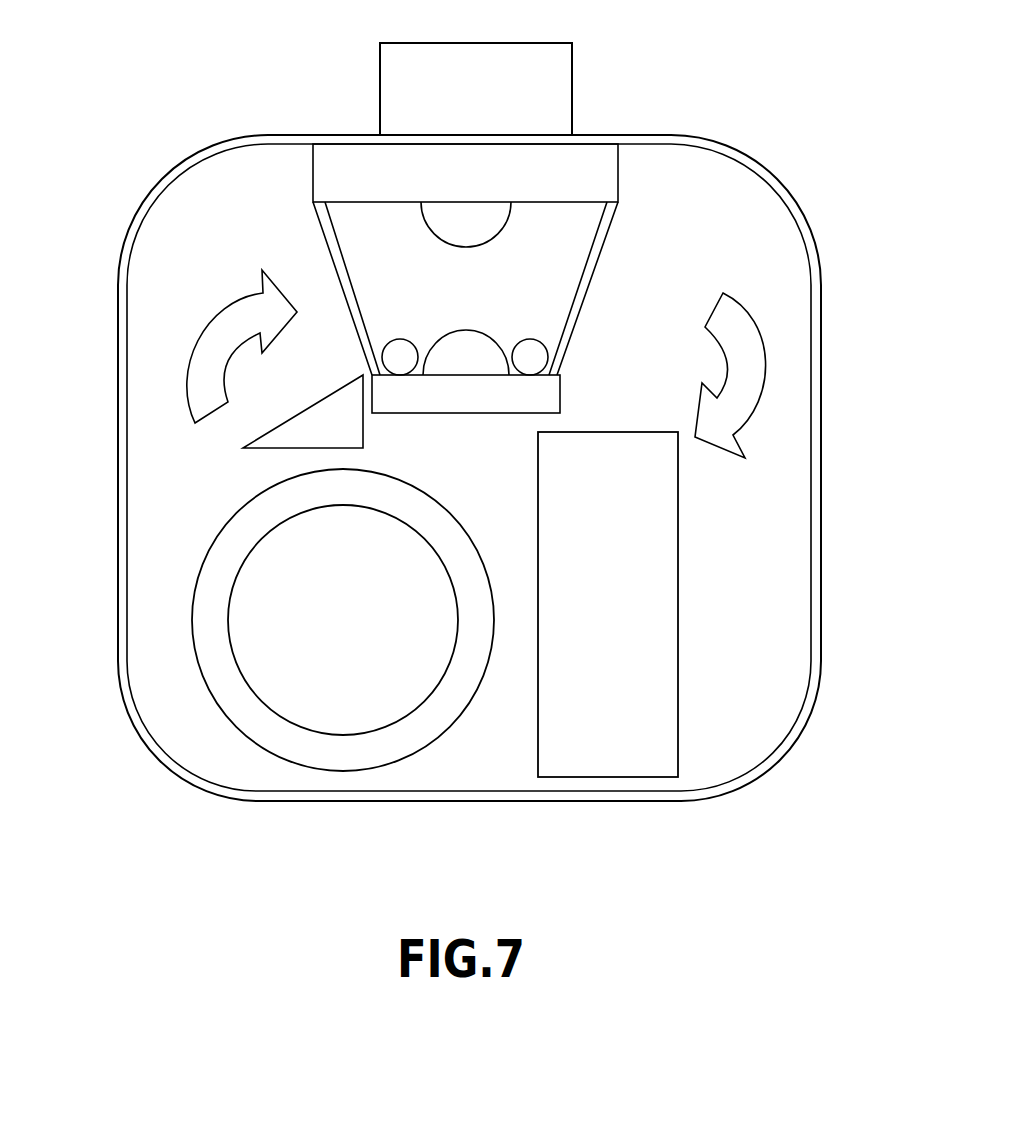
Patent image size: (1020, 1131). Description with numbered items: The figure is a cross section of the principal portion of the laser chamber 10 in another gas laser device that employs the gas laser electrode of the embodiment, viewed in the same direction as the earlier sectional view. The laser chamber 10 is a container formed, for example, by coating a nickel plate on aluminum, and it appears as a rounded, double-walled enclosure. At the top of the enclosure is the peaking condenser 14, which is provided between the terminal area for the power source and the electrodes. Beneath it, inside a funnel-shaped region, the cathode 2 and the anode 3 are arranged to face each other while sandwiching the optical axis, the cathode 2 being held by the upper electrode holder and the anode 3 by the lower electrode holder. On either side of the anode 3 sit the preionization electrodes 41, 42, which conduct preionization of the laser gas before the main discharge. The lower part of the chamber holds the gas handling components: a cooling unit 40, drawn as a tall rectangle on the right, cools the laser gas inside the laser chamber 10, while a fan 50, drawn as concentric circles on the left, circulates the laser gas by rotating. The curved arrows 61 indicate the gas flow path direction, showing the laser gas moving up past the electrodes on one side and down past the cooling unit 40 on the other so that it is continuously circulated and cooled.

The cathode 2 is at (447, 222).
The anode 3 is at (477, 330).
The laser chamber 10 is at (821, 640).
The peaking condenser 14 is at (560, 92).
The cooling unit 40 is at (663, 525).
The preionization electrode 41 is at (530, 339).
The preionization electrode 42 is at (400, 339).
The fan 50 is at (195, 570).
The arrow 61 is at (231, 312).